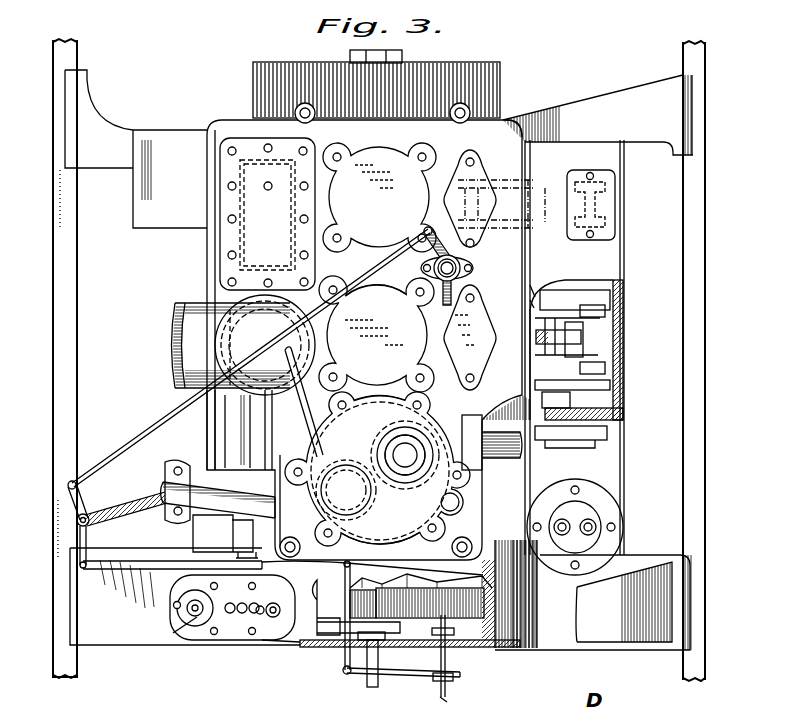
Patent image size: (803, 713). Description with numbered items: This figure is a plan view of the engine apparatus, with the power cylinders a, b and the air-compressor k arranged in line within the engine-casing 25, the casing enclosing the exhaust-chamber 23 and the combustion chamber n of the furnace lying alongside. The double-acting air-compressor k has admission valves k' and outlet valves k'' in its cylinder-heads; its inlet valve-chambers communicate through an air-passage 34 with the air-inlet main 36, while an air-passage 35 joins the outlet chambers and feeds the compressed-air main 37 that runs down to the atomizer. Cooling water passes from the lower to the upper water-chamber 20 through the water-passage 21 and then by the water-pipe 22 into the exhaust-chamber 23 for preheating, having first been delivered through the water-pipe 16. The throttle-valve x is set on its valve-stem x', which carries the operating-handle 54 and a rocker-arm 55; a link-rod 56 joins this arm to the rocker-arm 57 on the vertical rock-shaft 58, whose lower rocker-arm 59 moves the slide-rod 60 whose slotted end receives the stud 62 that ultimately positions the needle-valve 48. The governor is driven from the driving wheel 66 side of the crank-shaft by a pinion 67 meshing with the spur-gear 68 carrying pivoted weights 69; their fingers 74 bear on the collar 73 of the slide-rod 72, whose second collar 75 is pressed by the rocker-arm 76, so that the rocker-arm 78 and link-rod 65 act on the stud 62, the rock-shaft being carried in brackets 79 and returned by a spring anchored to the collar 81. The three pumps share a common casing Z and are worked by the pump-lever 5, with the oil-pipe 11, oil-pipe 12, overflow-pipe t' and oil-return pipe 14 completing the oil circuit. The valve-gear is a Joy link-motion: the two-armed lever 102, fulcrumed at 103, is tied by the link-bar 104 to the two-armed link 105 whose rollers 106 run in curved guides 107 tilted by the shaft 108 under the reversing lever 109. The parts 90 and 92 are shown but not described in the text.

The driving wheel 66 is at (503, 95).
The combustion chamber n is at (212, 266).
The power cylinder a is at (420, 152).
The operating-handle 54 is at (445, 327).
The power cylinder b is at (372, 283).
The two-armed lever 102 is at (543, 182).
The fulcrum 103 is at (605, 207).
The link-bar 104 is at (583, 337).
The two-armed link 105 is at (566, 310).
The rollers 106 is at (607, 303).
The curved guides 107 is at (610, 285).
The shaft 108 is at (565, 400).
The reversing lever 109 is at (606, 434).
The exhaust-chamber 23 is at (220, 345).
The engine-casing 25 is at (268, 434).
The water-pipe 22 is at (305, 415).
The link-rod 56 is at (133, 433).
The rocker-arm 55 is at (427, 227).
The throttle-valve x is at (464, 273).
The valve-stem x' is at (475, 258).
The water-chamber 20 is at (364, 410).
The air-compressor k is at (375, 377).
The admission valves k' is at (399, 455).
The outlet valves k'' is at (346, 490).
The air-passage 34 is at (440, 468).
The air-passage 35 is at (373, 528).
The water-passage 21 is at (451, 510).
The air-inlet main 36 is at (520, 446).
The rocker-arm 57 is at (88, 505).
The vertical rock-shaft 58 is at (78, 522).
The rocker-arm 59 is at (80, 548).
The slide-rod 60 is at (114, 572).
The compressed-air main 37 is at (218, 491).
The needle-valve 48 is at (247, 557).
The water-pipe 16 is at (153, 658).
The pump casing Z is at (175, 620).
The stud 62 is at (250, 575).
The overflow-pipe t' is at (232, 644).
The oil-return pipe 14 is at (246, 614).
The oil-pipe 11 is at (281, 612).
The pump-lever 5 is at (357, 607).
The link-rod 65 is at (290, 568).
The pinion 67 is at (372, 592).
The spur-gear 68 is at (430, 590).
The blocks or weights 69 is at (437, 622).
The collar 73 is at (455, 632).
The slide-rod 72 is at (455, 660).
The oil-pipe 12 is at (280, 654).
The rocker-arm 78 is at (342, 650).
The brackets 79 is at (344, 674).
The fingers 74 is at (436, 650).
The rocker-arm 76 is at (408, 688).
The collar or disk 75 is at (437, 703).
The plate 90 is at (560, 522).
The bearing 92 is at (592, 522).
The collar 81 is at (588, 539).